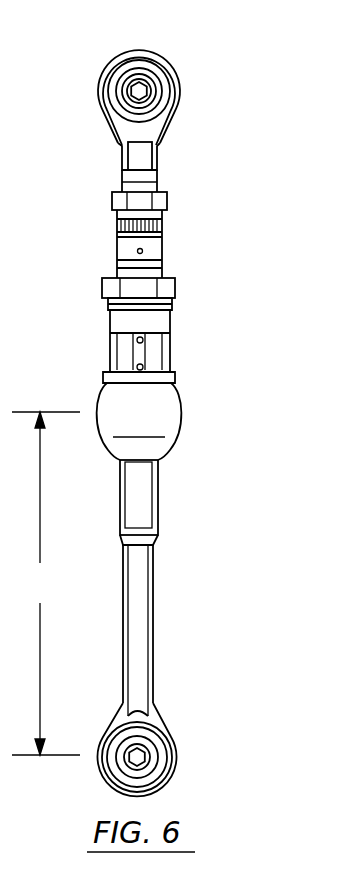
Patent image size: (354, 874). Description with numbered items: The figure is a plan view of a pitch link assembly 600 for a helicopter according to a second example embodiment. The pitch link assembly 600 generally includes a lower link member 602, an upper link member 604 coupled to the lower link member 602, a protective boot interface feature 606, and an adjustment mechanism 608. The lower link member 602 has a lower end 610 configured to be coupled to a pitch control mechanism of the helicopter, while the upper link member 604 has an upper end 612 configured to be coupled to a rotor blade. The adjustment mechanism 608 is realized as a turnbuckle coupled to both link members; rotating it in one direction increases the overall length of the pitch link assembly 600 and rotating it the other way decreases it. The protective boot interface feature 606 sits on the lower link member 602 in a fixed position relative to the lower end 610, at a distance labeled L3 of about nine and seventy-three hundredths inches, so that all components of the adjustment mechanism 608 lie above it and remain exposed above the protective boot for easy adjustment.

The pitch link assembly 600 is at (163, 35).
The upper end 612 is at (180, 97).
The upper link member 604 is at (157, 162).
The adjustment mechanism 608 is at (163, 250).
The protective boot interface feature 606 is at (178, 423).
The lower link member 602 is at (153, 660).
The lower end 610 is at (177, 757).